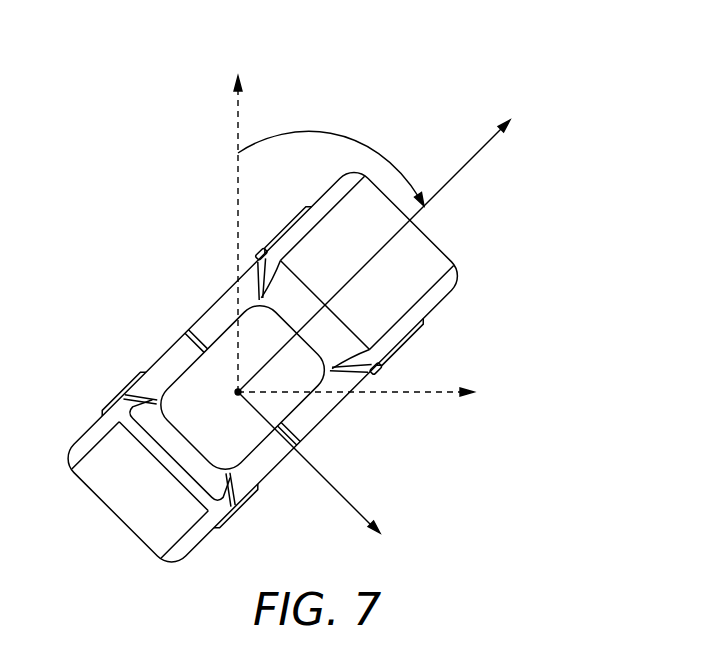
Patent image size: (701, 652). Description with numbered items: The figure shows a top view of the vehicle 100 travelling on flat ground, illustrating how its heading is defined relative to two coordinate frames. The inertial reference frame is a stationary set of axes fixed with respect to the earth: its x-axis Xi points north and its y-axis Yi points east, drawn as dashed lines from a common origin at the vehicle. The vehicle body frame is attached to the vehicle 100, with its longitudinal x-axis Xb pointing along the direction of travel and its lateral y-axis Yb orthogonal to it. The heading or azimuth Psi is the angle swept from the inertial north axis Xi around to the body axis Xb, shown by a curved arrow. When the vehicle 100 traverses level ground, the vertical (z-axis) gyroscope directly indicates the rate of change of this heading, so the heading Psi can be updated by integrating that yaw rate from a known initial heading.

The vehicle 100 is at (123, 523).
The inertial reference frame x-axis Xi is at (240, 205).
The inertial reference frame y-axis Yi is at (399, 391).
The vehicle body frame x-axis Xb is at (385, 246).
The vehicle body frame y-axis Yb is at (323, 476).
The heading Psi is at (331, 156).